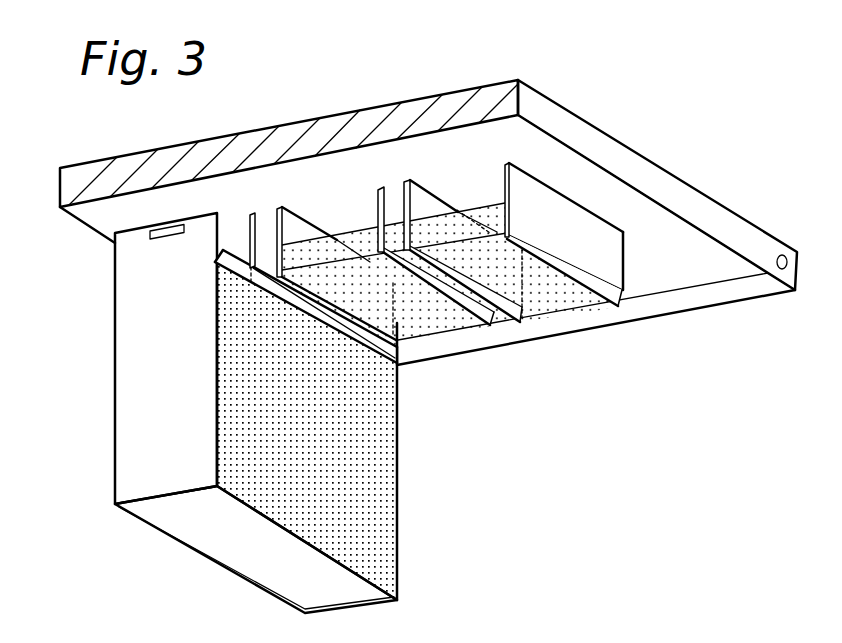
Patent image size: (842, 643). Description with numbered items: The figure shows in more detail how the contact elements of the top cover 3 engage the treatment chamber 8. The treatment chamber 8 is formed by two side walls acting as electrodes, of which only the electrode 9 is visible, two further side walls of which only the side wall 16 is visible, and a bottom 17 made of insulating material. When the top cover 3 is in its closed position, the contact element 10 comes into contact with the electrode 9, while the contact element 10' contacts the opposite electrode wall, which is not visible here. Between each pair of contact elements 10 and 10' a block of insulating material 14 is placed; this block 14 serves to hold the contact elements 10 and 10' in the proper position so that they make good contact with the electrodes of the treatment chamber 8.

The top cover 3 is at (687, 208).
The treatment chamber 8 is at (238, 413).
The electrode 9 is at (377, 557).
The contact element 10 is at (430, 186).
The contact element 10' is at (399, 199).
The block of insulating material 14 is at (417, 318).
The side wall 16 is at (137, 472).
The bottom 17 is at (257, 557).